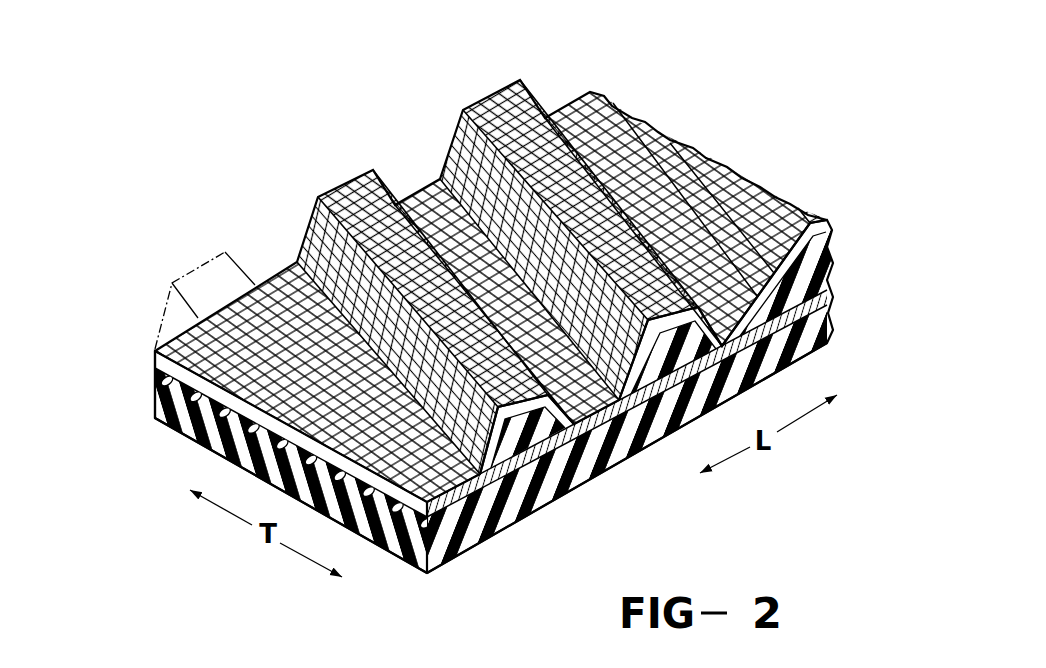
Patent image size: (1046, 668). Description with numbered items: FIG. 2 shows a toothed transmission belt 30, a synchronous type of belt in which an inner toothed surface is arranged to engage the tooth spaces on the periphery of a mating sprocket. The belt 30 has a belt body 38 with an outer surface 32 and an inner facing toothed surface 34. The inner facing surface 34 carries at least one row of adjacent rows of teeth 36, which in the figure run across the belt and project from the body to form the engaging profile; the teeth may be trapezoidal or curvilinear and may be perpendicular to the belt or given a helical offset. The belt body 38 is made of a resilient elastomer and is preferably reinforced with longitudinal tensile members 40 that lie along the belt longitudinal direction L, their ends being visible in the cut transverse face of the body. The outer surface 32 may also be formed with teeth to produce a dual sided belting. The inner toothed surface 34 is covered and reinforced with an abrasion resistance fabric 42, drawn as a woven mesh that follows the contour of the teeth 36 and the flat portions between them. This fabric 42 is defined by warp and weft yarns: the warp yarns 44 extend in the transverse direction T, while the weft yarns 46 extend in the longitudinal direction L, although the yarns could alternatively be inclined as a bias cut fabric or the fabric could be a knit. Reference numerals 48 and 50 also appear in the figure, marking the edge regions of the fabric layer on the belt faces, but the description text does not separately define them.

The toothed belt 30 is at (716, 116).
The outer surface 32 is at (472, 550).
The inner facing toothed surface 34 is at (436, 193).
The teeth 36 is at (510, 105).
The belt body 38 is at (398, 540).
The longitudinal tensile members 40 is at (153, 393).
The abrasion resistance fabric 42 is at (156, 345).
The warp yarns 44 is at (356, 224).
The weft yarns 46 is at (280, 277).
The fabric band edge on transverse face 48 is at (155, 354).
The fabric layer edge on longitudinal face 50 is at (529, 464).